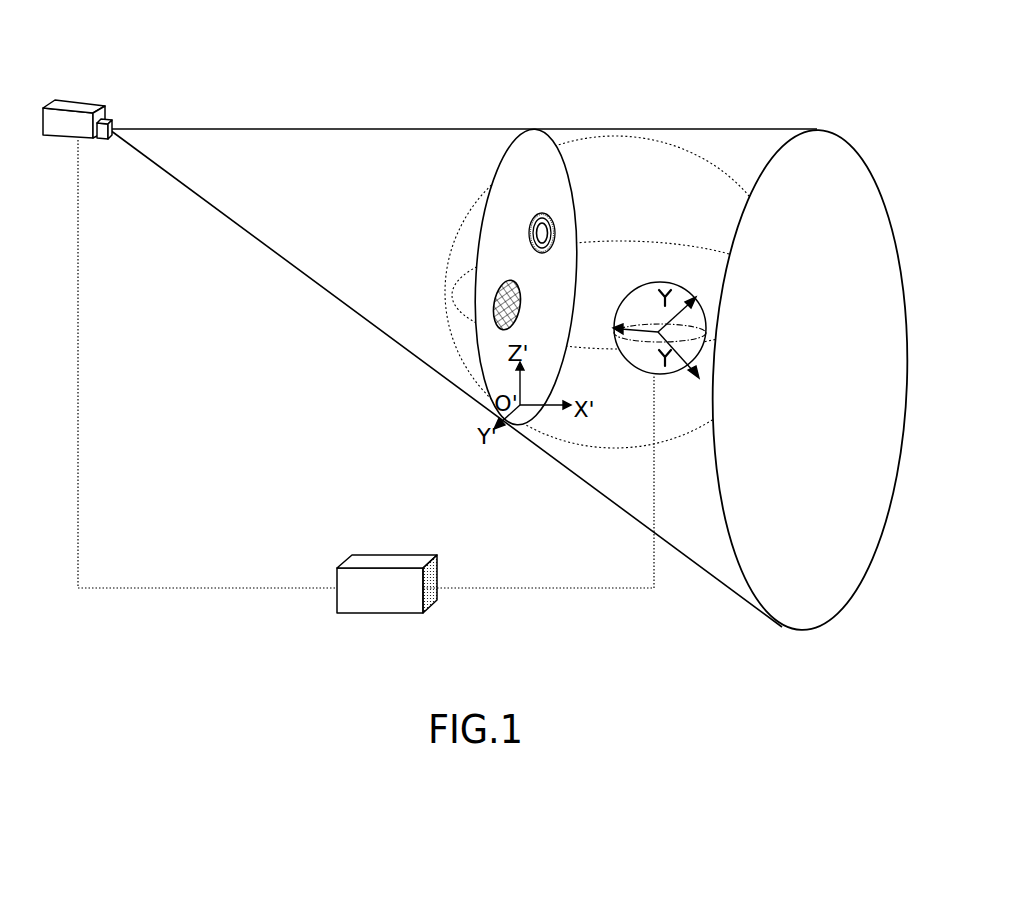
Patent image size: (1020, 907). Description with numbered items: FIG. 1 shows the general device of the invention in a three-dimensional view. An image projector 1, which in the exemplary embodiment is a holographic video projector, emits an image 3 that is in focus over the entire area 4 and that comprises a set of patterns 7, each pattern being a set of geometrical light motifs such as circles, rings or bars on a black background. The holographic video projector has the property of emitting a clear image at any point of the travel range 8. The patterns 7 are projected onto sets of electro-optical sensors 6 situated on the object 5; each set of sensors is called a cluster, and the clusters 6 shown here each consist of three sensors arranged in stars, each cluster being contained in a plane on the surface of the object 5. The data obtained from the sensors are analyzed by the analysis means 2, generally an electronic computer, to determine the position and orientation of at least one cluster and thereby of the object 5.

The image projector 1 is at (100, 97).
The analysis means 2 is at (348, 615).
The image 3 is at (528, 137).
The area 4 is at (653, 163).
The object 5 is at (668, 378).
The electro-optical sensors 6 is at (660, 292).
The patterns 7 is at (530, 228).
The travel range 8 is at (445, 283).